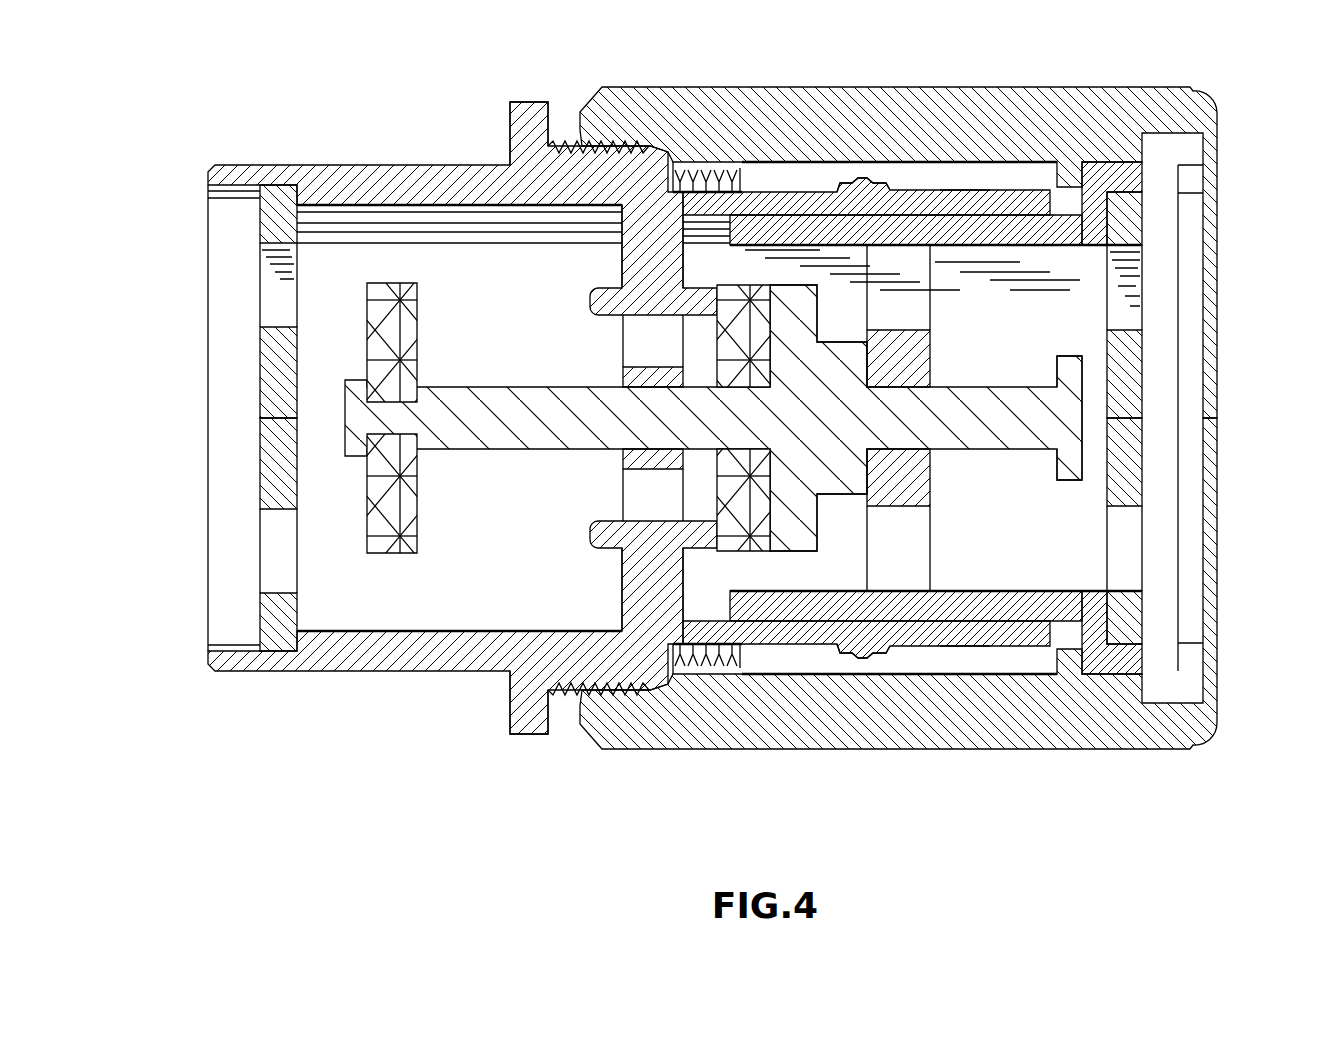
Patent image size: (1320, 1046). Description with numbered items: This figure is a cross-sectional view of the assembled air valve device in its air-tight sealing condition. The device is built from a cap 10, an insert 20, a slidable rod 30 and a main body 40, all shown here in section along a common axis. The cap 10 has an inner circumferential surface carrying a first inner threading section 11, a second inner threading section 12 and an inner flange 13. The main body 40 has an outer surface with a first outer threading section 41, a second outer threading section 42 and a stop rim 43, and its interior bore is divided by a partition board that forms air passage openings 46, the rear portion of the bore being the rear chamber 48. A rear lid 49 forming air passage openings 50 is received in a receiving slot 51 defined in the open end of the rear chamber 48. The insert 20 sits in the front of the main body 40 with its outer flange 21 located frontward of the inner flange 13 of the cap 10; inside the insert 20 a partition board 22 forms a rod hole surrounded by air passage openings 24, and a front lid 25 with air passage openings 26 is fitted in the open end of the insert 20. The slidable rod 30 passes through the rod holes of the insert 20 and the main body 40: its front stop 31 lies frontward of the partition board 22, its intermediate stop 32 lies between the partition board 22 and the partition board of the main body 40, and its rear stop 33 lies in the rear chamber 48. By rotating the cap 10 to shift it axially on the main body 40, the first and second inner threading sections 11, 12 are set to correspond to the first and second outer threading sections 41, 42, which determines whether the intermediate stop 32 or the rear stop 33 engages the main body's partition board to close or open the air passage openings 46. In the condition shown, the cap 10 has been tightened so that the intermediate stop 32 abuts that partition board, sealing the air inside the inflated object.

The cap 10 is at (710, 715).
The first inner threading section 11 is at (640, 140).
The second inner threading section 12 is at (716, 168).
The inner flange 13 is at (1030, 198).
The insert 20 is at (1040, 605).
The outer flange 21 is at (1122, 178).
The partition board 22 is at (905, 487).
The air passage openings 24 is at (912, 555).
The front lid 25 is at (1128, 487).
The air passage openings 26 is at (1127, 270).
The slidable rod 30 is at (446, 432).
The front stop 31 is at (1070, 420).
The intermediate stop 32 is at (747, 527).
The rear stop 33 is at (375, 520).
The main body 40 is at (425, 183).
The first outer threading section 41 is at (552, 140).
The second outer threading section 42 is at (862, 180).
The stop rim 43 is at (962, 186).
The air passage openings 46 is at (633, 340).
The rear chamber 48 is at (332, 222).
The rear lid 49 is at (270, 375).
The air passage openings 50 is at (270, 278).
The receiving slot 51 is at (230, 445).